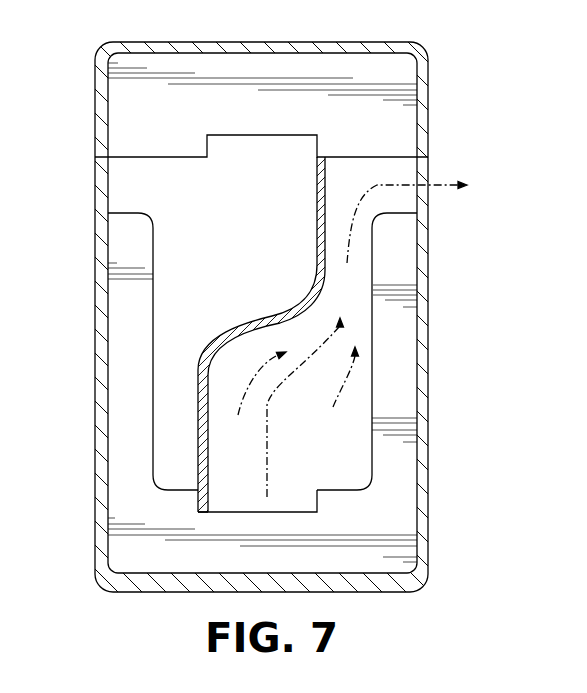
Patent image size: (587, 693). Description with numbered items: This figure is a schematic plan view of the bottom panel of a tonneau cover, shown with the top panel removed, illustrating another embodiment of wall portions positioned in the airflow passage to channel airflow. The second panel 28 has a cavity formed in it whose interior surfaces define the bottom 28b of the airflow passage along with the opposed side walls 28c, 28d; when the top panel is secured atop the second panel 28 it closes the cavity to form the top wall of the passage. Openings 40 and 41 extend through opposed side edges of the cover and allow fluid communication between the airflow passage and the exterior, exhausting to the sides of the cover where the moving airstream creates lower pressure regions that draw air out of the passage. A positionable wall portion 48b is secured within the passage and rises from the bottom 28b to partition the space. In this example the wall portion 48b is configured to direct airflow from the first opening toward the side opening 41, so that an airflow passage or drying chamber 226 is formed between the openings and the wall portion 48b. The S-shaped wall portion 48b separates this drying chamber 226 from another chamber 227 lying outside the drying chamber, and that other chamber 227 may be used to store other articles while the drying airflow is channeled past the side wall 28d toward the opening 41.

The second panel 28 is at (93, 118).
The opening 40 is at (102, 187).
The side wall 28c is at (153, 301).
The chamber 227 is at (212, 312).
The wall portion 48b is at (325, 178).
The opening 41 is at (424, 168).
The side wall 28d is at (372, 348).
The bottom 28b is at (360, 385).
The drying chamber 226 is at (343, 458).